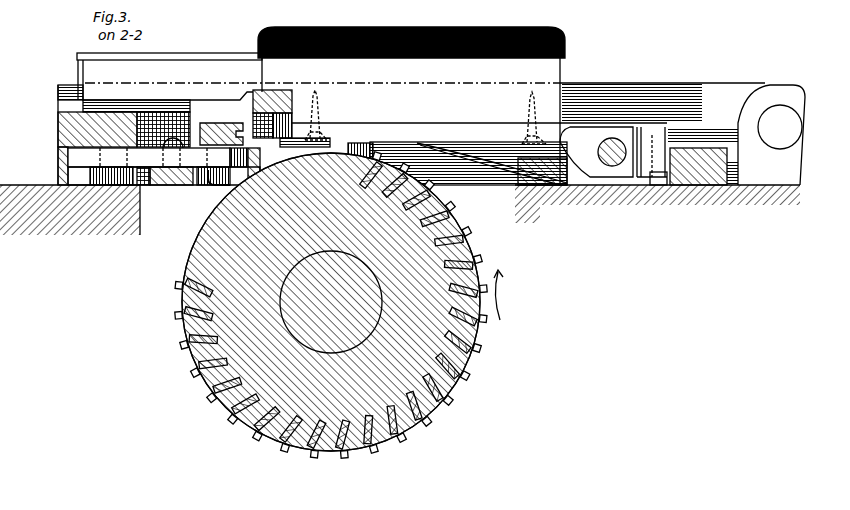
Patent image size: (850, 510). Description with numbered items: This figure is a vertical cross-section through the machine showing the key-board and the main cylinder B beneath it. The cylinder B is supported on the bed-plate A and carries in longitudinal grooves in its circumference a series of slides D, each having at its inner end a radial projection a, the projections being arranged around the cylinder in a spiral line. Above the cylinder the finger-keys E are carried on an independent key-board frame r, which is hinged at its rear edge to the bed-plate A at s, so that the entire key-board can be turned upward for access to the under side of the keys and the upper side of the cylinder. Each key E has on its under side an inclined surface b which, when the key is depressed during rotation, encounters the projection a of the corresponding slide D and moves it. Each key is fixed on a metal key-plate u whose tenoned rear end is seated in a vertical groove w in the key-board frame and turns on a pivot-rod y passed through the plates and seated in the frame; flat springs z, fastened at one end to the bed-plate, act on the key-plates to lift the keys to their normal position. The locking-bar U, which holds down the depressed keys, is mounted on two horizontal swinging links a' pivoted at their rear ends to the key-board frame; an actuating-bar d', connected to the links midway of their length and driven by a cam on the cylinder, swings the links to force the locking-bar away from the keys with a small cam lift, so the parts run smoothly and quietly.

The finger-keys E is at (321, 85).
The key-board frame r is at (358, 135).
The locking-bar U is at (221, 126).
The swinging links a' is at (157, 152).
The actuating-bar d' is at (164, 178).
The bed-plate A is at (400, 210).
The hinge s is at (771, 135).
The pivot-rod y is at (596, 152).
The vertical grooves w is at (663, 178).
The key-plate u is at (468, 155).
The flat springs z is at (492, 164).
The inclined surface b is at (355, 142).
The main cylinder B is at (331, 302).
The slides D is at (185, 358).
The radial projection a is at (324, 309).